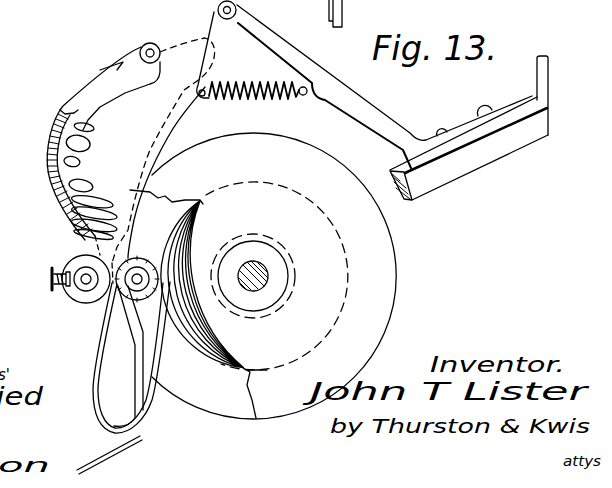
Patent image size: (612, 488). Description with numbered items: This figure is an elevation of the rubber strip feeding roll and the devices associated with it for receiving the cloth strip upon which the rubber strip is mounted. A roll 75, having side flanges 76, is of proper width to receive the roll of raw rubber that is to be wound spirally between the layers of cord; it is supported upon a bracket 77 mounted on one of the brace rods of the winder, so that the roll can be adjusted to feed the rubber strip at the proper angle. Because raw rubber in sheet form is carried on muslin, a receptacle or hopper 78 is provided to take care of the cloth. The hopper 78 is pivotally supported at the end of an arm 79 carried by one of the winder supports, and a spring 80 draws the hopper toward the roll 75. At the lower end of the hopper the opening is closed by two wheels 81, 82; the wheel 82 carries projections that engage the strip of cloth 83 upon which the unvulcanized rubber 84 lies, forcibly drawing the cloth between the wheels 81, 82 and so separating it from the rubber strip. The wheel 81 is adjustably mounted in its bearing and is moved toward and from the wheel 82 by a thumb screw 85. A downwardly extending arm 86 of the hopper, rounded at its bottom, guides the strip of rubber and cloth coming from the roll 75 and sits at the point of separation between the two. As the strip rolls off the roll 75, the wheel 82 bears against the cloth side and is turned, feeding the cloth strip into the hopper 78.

The roll 75 is at (295, 198).
The side flanges 76 is at (360, 173).
The bracket 77 is at (262, 270).
The receptacle or hopper 78 is at (172, 44).
The arm 79 is at (380, 118).
The spring 80 is at (253, 80).
The wheel 81 is at (73, 256).
The wheel 82 is at (142, 257).
The strip of cloth 83 is at (100, 346).
The unvulcanized rubber 84 is at (134, 440).
The thumb screw 85 is at (51, 279).
The downwardly extending arm 86 is at (137, 393).